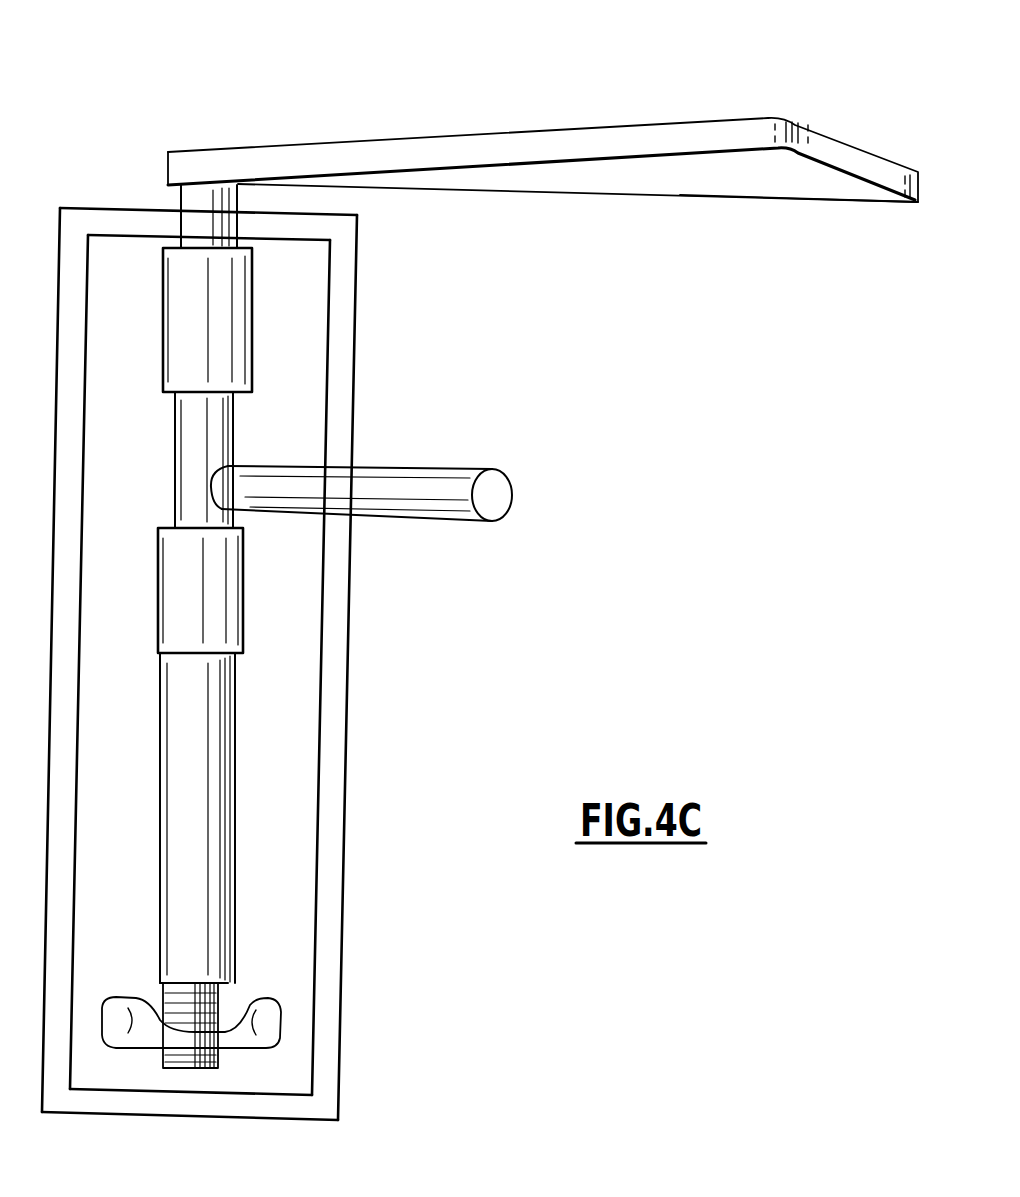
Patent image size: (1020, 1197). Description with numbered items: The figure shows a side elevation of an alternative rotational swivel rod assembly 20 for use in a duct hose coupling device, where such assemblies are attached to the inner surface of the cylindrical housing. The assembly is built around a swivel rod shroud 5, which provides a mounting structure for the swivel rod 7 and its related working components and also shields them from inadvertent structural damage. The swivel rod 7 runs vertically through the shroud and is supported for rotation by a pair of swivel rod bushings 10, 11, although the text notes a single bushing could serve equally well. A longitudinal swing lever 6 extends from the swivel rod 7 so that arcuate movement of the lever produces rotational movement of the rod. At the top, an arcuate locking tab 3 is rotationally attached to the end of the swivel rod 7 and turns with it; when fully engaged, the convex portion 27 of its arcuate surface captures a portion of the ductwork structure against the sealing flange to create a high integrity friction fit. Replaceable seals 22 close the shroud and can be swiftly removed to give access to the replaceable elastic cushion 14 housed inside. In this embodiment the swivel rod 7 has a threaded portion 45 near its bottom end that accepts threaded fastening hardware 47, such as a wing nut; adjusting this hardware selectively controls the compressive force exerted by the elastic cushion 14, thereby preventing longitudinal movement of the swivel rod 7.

The arcuate locking tab 3 is at (626, 140).
The swivel rod shroud 5 is at (349, 643).
The swing lever 6 is at (496, 497).
The swivel rod 7 is at (188, 446).
The swivel rod bushing 10 is at (188, 323).
The swivel rod bushing 11 is at (180, 588).
The elastic cushion 14 is at (173, 820).
The rotational swivel rod assembly 20 is at (142, 58).
The replaceable seal 22 is at (110, 213).
The convex portion of arcuate surface 27 is at (778, 185).
The threaded portion 45 is at (205, 995).
The threaded fastening hardware 47 is at (271, 1035).